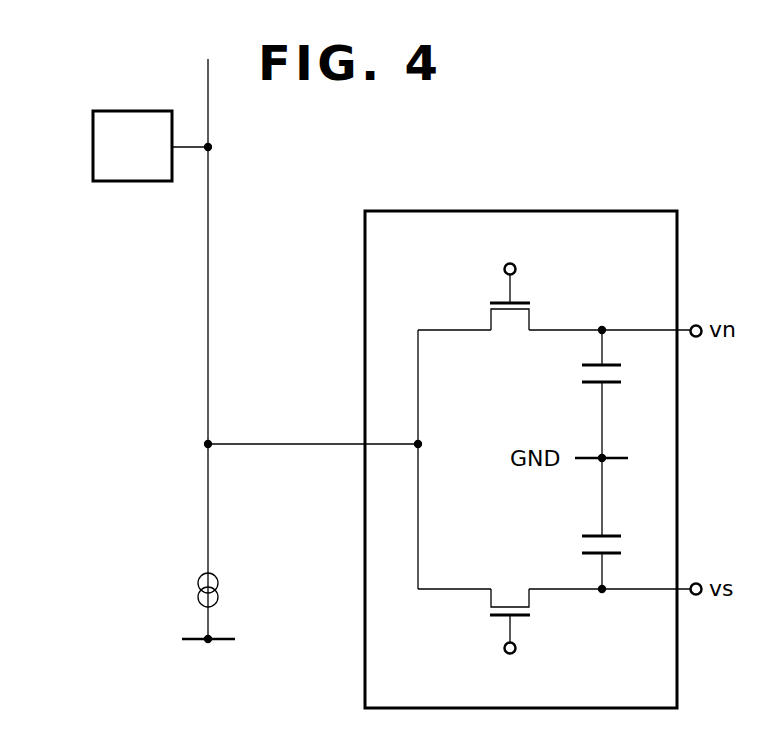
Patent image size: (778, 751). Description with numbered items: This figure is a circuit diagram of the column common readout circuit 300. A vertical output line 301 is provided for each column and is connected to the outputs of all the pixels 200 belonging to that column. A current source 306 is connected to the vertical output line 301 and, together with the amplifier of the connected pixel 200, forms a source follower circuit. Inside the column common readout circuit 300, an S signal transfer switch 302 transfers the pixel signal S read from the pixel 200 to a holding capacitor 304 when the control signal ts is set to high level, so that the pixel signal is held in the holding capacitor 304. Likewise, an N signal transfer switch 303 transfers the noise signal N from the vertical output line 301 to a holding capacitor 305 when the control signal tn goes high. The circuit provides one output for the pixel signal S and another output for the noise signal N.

The pixel 200 is at (93, 143).
The column common readout circuit 300 is at (593, 210).
The vertical output line 301 is at (208, 356).
The S signal transfer switch 302 is at (535, 611).
The N signal transfer switch 303 is at (535, 306).
The holding capacitor 304 is at (577, 543).
The holding capacitor 305 is at (577, 372).
The current source 306 is at (195, 588).